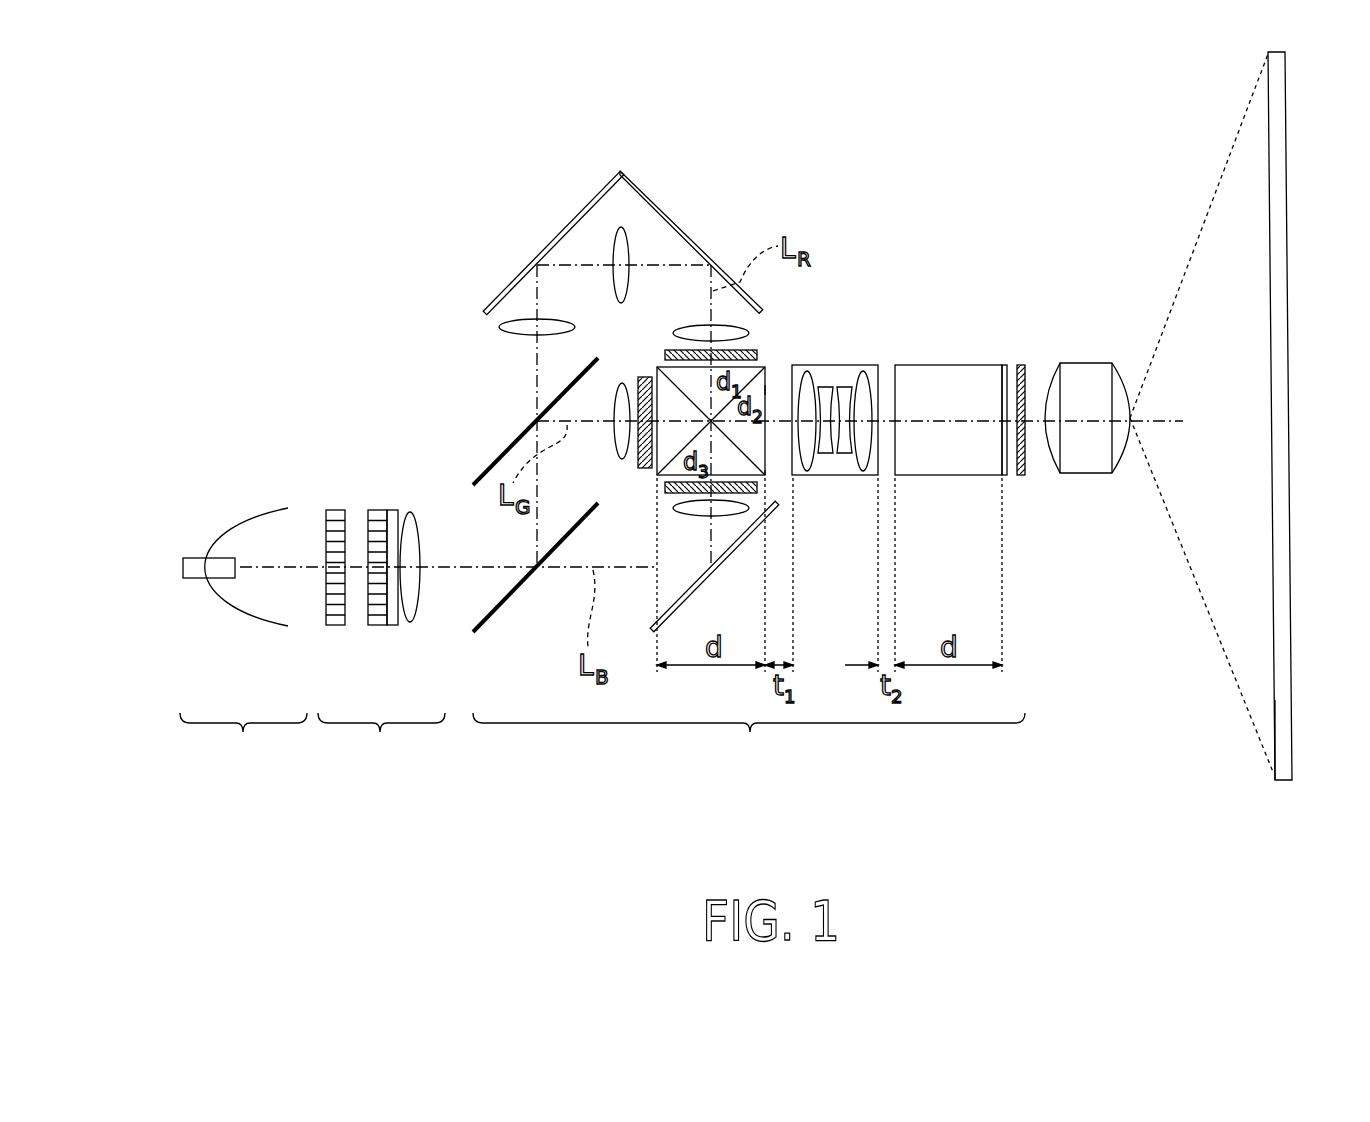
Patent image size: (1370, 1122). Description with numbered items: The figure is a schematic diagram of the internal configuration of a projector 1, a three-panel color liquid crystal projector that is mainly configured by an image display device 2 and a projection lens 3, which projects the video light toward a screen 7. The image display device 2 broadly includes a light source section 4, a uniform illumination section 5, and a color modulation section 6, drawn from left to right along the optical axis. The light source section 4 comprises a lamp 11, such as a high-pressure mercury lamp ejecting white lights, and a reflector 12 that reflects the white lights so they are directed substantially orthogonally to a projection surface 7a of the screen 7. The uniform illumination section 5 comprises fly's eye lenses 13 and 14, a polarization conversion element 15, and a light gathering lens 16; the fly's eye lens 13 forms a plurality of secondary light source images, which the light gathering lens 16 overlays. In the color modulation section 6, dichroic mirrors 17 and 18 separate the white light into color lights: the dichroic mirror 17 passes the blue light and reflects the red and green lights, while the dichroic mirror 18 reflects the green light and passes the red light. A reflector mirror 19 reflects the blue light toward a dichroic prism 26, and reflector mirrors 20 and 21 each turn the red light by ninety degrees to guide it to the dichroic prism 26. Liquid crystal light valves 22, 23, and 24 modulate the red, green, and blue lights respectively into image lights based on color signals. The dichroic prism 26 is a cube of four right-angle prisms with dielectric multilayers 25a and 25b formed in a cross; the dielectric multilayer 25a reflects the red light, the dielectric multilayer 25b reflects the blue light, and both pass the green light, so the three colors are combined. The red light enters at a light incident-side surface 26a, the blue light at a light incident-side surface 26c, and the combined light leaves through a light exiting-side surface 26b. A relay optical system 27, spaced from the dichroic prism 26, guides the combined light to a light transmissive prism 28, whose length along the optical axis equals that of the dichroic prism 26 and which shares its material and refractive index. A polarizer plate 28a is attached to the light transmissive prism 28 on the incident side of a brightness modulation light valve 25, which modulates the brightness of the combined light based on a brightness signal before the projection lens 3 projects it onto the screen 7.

The projector 1 is at (248, 195).
The image display device 2 is at (372, 252).
The projection lens 3 is at (1082, 363).
The light source section 4 is at (243, 742).
The uniform illumination section 5 is at (381, 742).
The color modulation section 6 is at (749, 741).
The screen 7 is at (1283, 742).
The projection surface 7a is at (1272, 733).
The lamp 11 is at (195, 580).
The reflector 12 is at (248, 613).
The fly's eye lens 13 is at (338, 508).
The fly's eye lens 14 is at (378, 508).
The polarization conversion element 15 is at (390, 625).
The light gathering lens 16 is at (411, 622).
The dichroic mirror 17 is at (520, 590).
The dichroic mirror 18 is at (503, 450).
The reflector mirror 19 is at (712, 577).
The reflector mirror 20 is at (573, 222).
The reflector mirror 21 is at (677, 220).
The liquid crystal light valve 22 is at (762, 362).
The liquid crystal light valve 23 is at (647, 470).
The liquid crystal light valve 24 is at (765, 483).
The brightness modulation light valve 25 is at (1020, 365).
The dielectric multilayer 25a is at (655, 362).
The dielectric multilayer 25b is at (757, 488).
The dichroic prism 26 is at (768, 392).
The light incident-side surface 26a is at (757, 357).
The light exiting-side surface 26b is at (766, 458).
The light incident-side surface 26c is at (662, 489).
The relay optical system 27 is at (855, 365).
The light transmissive prism 28 is at (948, 365).
The polarizer plate 28a is at (1005, 477).